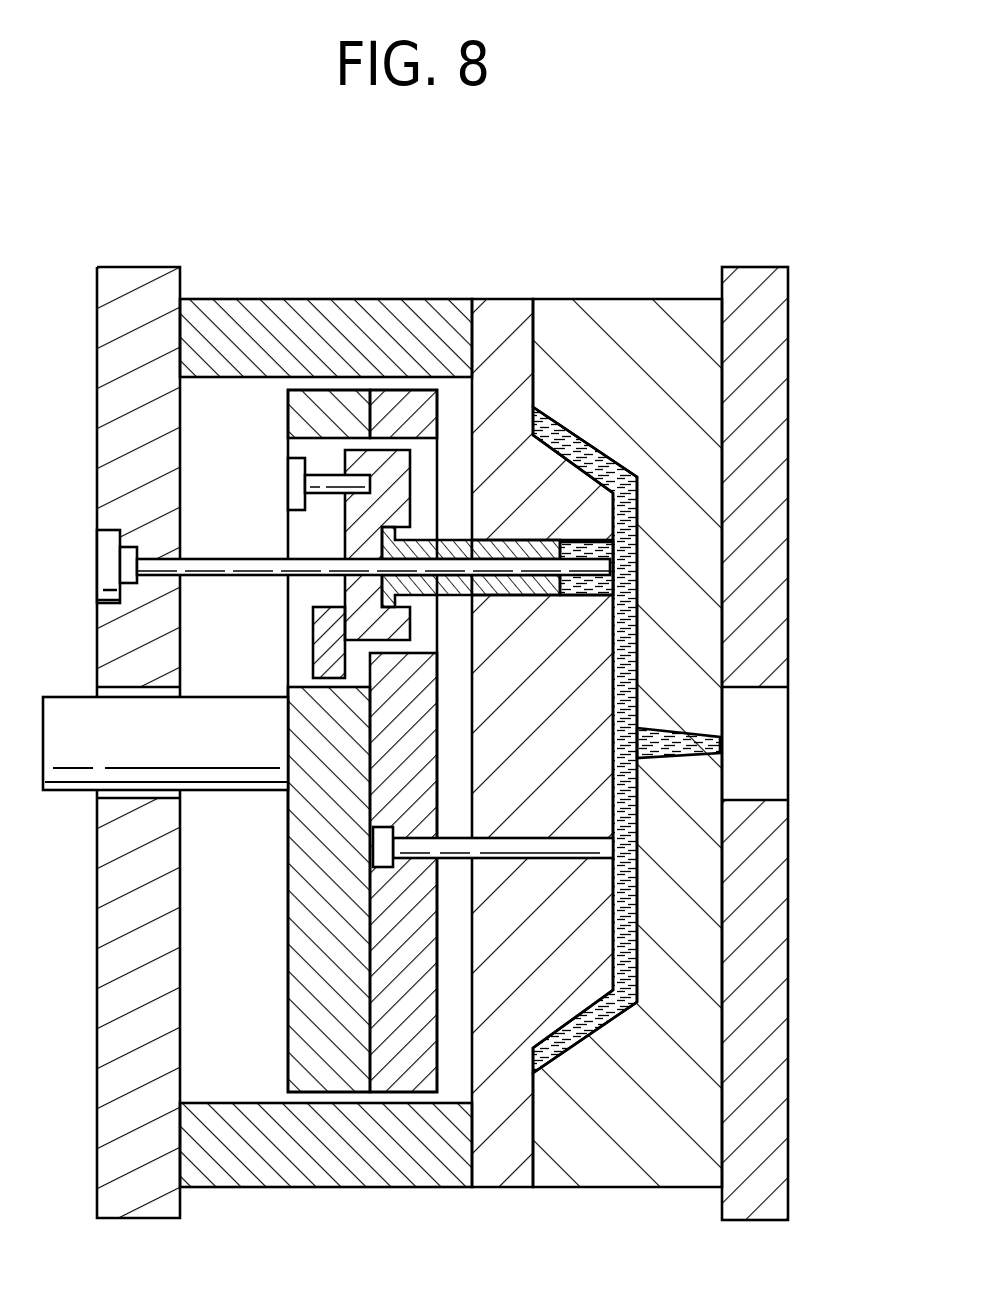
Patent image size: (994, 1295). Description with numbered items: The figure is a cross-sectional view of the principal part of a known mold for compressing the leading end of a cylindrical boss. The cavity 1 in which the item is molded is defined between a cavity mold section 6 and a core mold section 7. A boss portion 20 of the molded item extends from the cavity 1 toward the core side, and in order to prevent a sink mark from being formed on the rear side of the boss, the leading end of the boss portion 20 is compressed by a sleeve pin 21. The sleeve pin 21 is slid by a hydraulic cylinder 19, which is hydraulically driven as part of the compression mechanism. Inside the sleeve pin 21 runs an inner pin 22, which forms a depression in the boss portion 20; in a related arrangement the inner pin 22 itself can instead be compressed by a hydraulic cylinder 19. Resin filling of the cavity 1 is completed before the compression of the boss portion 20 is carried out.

The cavity 1 is at (637, 592).
The cavity mold section 6 is at (627, 327).
The core mold section 7 is at (508, 323).
The hydraulic cylinder 19 is at (252, 453).
The boss portion 20 is at (577, 543).
The sleeve pin 21 is at (457, 537).
The inner pin 22 is at (228, 568).